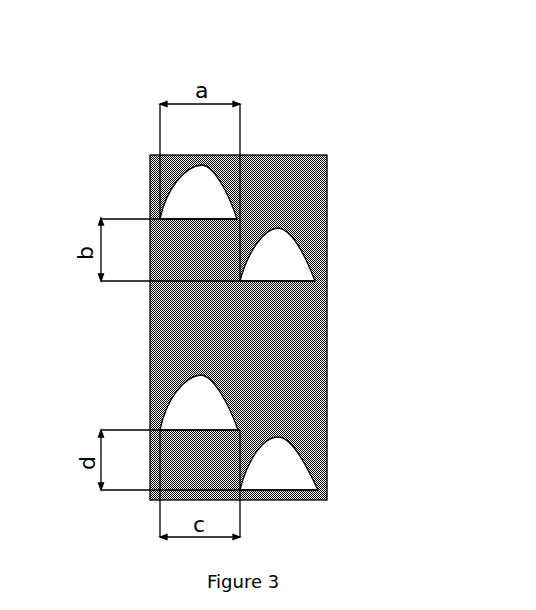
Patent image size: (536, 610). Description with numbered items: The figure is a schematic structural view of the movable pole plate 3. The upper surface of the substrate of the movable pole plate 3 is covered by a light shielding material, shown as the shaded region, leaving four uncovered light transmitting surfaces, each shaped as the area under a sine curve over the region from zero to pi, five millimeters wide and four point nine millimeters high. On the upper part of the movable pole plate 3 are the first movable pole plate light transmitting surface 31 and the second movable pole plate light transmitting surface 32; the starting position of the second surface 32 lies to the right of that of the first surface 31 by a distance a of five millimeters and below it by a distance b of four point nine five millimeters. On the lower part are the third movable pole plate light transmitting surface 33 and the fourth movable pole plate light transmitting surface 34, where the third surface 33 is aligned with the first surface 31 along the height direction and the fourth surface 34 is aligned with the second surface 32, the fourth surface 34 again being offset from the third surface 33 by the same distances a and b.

The movable pole plate 3 is at (249, 254).
The first movable pole plate light transmitting surface 31 is at (151, 119).
The second movable pole plate light transmitting surface 32 is at (338, 178).
The third movable pole plate light transmitting surface 33 is at (300, 345).
The fourth movable pole plate light transmitting surface 34 is at (338, 424).